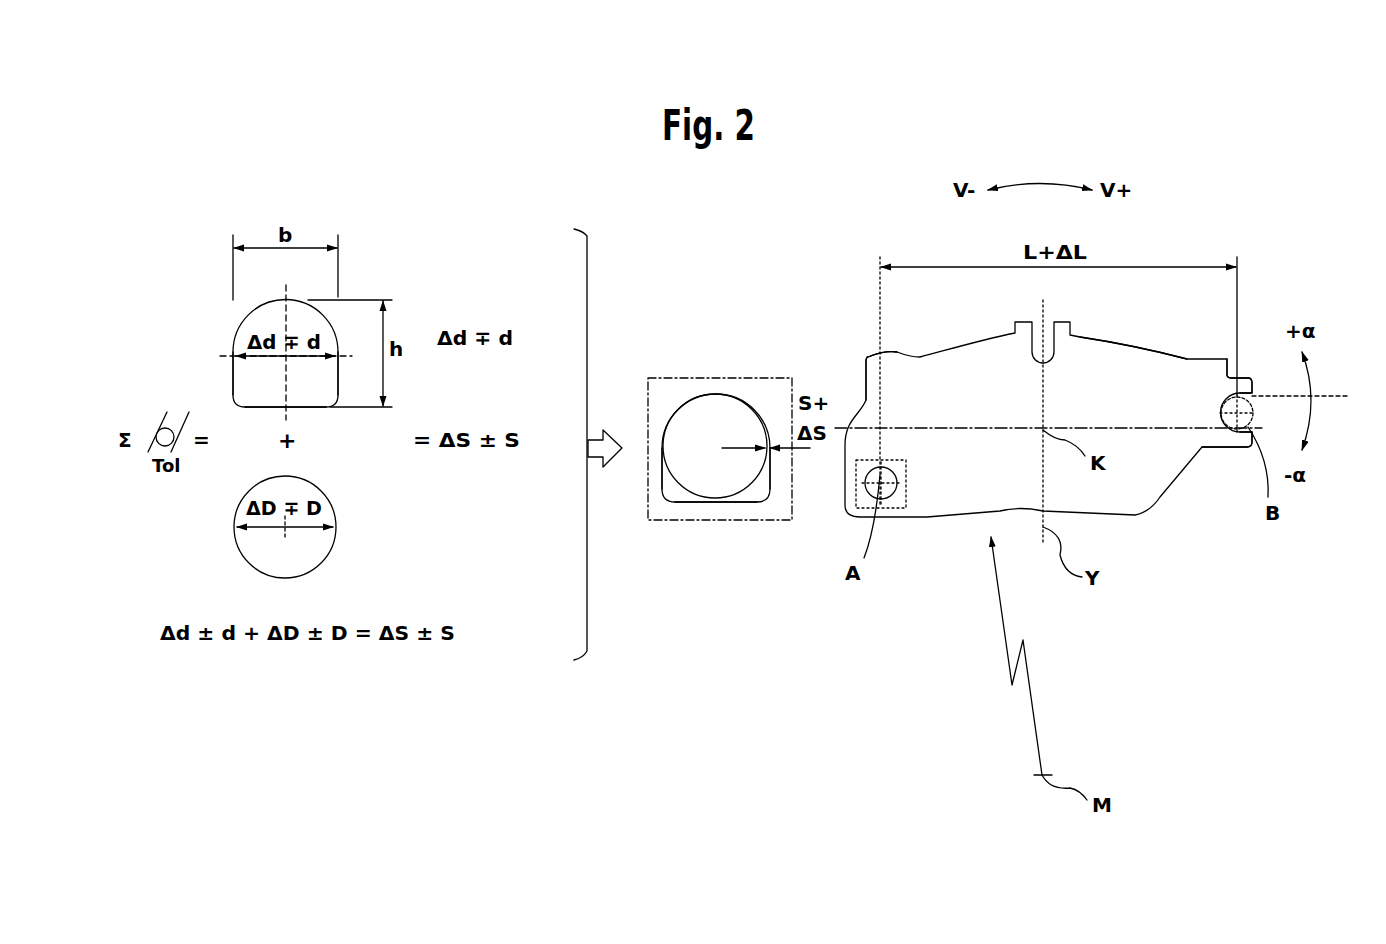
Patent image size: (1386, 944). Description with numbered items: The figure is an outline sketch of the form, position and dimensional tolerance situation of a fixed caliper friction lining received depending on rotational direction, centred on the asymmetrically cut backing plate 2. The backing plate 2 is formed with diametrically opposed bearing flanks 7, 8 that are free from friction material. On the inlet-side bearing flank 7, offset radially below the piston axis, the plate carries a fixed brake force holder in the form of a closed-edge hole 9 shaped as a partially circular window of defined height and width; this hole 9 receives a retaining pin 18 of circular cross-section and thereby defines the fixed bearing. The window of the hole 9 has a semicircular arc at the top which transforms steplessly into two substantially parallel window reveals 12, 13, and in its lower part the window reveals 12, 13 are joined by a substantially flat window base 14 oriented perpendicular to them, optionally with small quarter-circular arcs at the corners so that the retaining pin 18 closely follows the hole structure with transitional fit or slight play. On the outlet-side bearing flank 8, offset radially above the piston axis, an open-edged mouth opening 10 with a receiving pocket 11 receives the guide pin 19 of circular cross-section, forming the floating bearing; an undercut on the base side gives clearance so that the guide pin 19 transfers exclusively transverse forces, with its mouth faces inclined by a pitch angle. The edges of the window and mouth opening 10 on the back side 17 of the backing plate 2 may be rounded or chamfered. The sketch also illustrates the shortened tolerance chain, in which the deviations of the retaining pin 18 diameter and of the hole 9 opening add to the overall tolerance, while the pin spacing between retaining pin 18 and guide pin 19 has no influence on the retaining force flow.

The backing plate 2 is at (1143, 370).
The bearing flank 7 is at (867, 443).
The bearing flank 8 is at (1212, 436).
The hole 9 is at (236, 328).
The mouth opening 10 is at (1253, 395).
The receiving pocket 11 is at (1222, 398).
The window reveal 12 is at (233, 357).
The window reveal 13 is at (338, 368).
The window base 14 is at (302, 407).
The back side 17 is at (1114, 390).
The retaining pin 18 is at (298, 567).
The guide pin 19 is at (1228, 433).